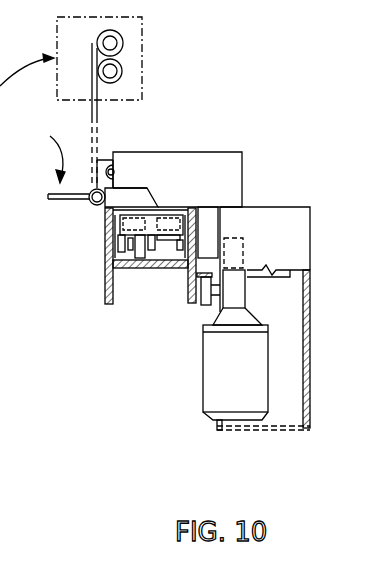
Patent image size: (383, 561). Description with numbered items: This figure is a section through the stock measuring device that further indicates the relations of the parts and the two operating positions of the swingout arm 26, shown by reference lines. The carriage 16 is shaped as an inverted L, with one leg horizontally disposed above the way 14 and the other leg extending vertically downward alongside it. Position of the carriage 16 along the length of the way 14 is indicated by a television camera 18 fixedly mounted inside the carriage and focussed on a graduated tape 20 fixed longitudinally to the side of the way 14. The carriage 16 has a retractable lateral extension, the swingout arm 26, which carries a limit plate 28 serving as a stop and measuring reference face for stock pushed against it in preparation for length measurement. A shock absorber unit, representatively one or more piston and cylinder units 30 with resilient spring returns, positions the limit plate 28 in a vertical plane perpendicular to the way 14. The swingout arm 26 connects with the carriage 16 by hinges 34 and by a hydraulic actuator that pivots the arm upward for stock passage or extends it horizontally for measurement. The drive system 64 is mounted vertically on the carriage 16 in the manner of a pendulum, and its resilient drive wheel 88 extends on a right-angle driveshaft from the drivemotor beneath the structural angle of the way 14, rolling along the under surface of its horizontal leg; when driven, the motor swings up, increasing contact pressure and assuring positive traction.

The way 14 is at (99, 285).
The carriage 16 is at (250, 180).
The television camera 18 is at (299, 236).
The graduated tape 20 is at (197, 237).
The swingout arm 26 is at (38, 154).
The limit plate 28 is at (143, 57).
The piston and cylinder units 30 is at (119, 79).
The hinges 34 is at (89, 206).
The drive system 64 is at (201, 398).
The resilient drive wheel 88 is at (203, 307).